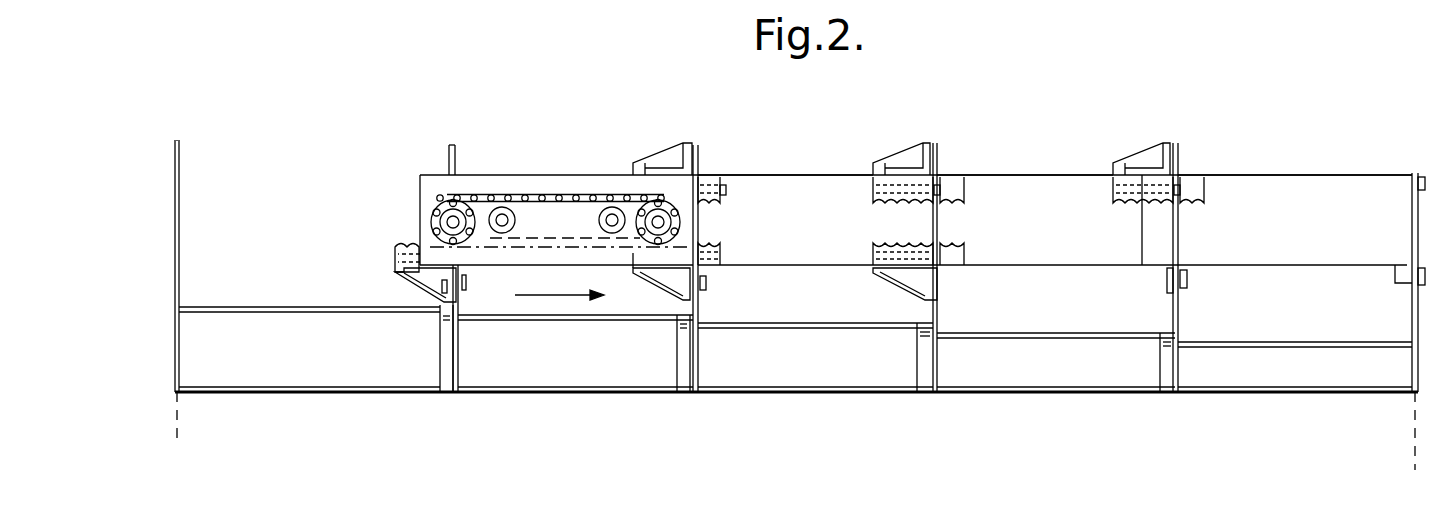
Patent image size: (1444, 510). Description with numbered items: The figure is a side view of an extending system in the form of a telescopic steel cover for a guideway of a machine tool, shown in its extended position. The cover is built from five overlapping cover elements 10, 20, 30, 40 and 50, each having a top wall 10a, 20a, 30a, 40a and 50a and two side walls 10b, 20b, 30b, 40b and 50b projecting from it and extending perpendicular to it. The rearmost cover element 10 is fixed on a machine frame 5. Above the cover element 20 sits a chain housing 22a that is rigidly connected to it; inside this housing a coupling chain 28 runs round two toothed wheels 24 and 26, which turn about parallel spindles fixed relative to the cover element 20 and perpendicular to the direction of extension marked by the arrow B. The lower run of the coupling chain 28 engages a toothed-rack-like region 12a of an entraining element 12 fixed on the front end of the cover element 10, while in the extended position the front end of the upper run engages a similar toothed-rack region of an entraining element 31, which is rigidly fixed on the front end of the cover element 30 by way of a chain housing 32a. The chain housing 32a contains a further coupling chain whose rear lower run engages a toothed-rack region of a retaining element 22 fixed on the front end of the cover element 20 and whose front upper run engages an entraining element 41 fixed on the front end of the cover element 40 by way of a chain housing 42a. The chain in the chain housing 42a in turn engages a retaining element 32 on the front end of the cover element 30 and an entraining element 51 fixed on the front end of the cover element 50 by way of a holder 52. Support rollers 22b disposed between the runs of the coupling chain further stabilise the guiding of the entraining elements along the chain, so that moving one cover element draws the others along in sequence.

The machine frame 5 is at (180, 172).
The cover element 10 is at (316, 349).
The top wall 10a is at (236, 296).
The side walls 10b is at (207, 358).
The entraining element 12 is at (395, 272).
The region like a toothed rack 12a is at (388, 252).
The cover element 20 is at (546, 289).
The top wall 20a is at (620, 322).
The side walls 20b is at (480, 360).
The retaining element 22 is at (703, 280).
The chain housing 22a is at (478, 174).
The support rollers 22b is at (502, 207).
The toothed wheel 24 is at (433, 216).
The toothed wheel 26 is at (653, 170).
The coupling chain 28 is at (550, 194).
The cover element 30 is at (864, 289).
The top wall 30a is at (862, 330).
The side walls 30b is at (729, 360).
The entraining element 31 is at (706, 170).
The retaining element 32 is at (960, 266).
The chain housing 32a is at (816, 172).
The cover element 40 is at (1025, 289).
The top wall 40a is at (1113, 340).
The side walls 40b is at (1040, 406).
The entraining element 41 is at (943, 163).
The chain housing 42a is at (1065, 192).
The cover element 50 is at (1262, 289).
The top wall 50a is at (1362, 349).
The side walls 50b is at (1208, 368).
The entraining element 51 is at (1196, 165).
The holder 52 is at (1325, 188).
The direction of extension B is at (552, 297).